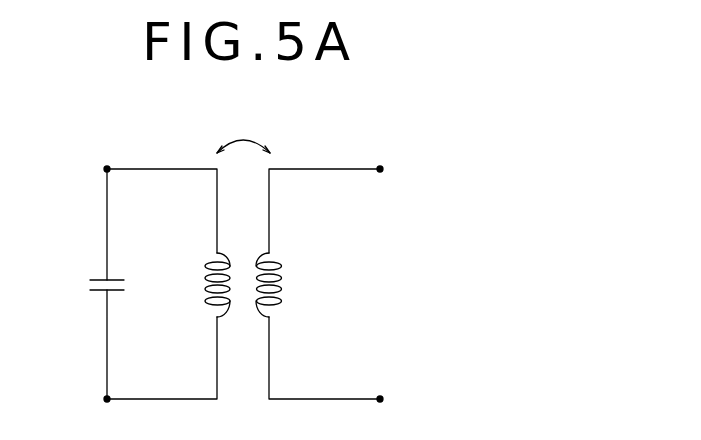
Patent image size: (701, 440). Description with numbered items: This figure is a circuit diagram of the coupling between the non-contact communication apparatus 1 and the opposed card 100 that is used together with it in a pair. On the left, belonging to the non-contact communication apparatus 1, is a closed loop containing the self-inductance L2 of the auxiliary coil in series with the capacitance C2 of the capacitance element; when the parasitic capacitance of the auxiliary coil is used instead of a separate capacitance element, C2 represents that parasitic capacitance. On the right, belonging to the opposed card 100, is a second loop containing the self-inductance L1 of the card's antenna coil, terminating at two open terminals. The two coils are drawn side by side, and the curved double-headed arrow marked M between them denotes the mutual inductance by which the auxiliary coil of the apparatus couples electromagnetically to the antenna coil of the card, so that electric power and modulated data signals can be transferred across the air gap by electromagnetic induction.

The non-contact communication apparatus 1 is at (133, 239).
The opposed card 100 is at (319, 239).
The mutual inductance M is at (243, 133).
The capacitance of the capacitance element C2 is at (100, 279).
The self-inductance of the auxiliary coil L2 is at (191, 285).
The self-inductance of the antenna coil L1 is at (283, 279).